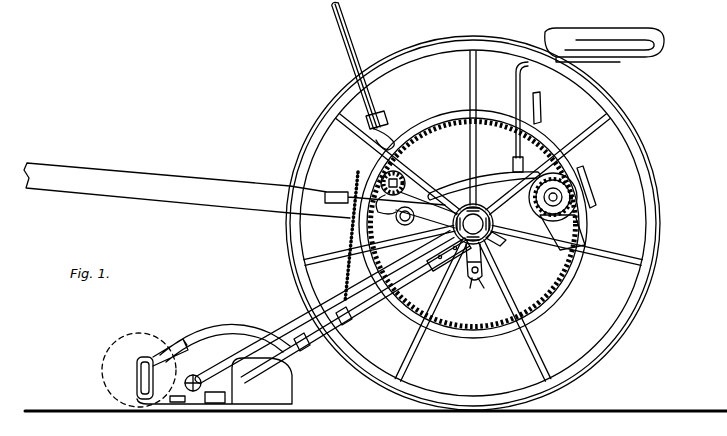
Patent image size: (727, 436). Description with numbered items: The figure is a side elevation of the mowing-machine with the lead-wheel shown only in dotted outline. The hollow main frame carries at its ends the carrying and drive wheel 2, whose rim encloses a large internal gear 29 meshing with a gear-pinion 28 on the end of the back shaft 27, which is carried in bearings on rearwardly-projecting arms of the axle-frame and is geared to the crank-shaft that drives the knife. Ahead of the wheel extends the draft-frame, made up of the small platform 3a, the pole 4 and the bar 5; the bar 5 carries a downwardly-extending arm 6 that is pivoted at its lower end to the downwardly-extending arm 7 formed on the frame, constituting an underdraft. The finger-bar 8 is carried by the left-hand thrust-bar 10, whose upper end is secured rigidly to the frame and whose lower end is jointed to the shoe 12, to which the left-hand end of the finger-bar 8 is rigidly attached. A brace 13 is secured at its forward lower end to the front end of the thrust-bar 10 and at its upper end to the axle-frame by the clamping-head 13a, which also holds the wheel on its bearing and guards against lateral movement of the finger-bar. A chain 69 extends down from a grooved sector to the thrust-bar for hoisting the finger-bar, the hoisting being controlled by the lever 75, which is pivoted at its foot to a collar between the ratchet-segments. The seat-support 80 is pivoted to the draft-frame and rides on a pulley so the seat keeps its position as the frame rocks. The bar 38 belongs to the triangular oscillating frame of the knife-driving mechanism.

The carrying and drive wheel 2 is at (648, 225).
The small platform 3a is at (462, 180).
The pole 4 is at (234, 190).
The bar 5 is at (415, 206).
The downwardly-extending arm 6 is at (468, 282).
The downwardly-extending arm 7 is at (483, 272).
The finger-bar 8 is at (214, 406).
The thrust-bar 10 is at (380, 308).
The shoe 12 is at (205, 352).
The brace 13 is at (302, 348).
The clamping-head 13a is at (500, 247).
The back shaft 27 is at (573, 197).
The gear-pinion 28 is at (567, 178).
The internal gear 29 is at (566, 283).
The bar of triangular oscillating frame 38 is at (300, 330).
The chain 69 is at (350, 244).
The lever 75 is at (372, 109).
The seat-support 80 is at (494, 178).